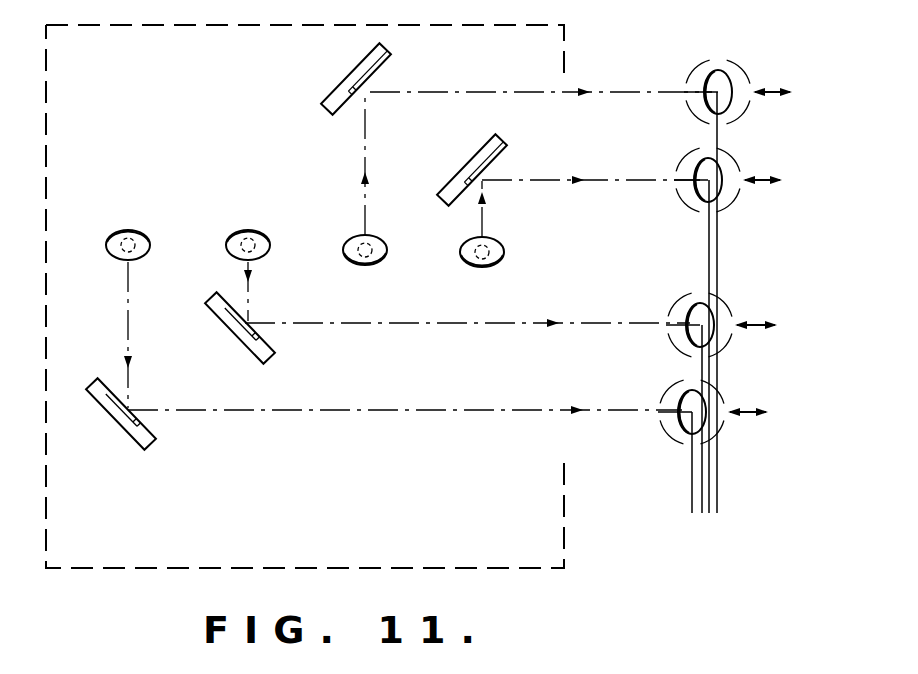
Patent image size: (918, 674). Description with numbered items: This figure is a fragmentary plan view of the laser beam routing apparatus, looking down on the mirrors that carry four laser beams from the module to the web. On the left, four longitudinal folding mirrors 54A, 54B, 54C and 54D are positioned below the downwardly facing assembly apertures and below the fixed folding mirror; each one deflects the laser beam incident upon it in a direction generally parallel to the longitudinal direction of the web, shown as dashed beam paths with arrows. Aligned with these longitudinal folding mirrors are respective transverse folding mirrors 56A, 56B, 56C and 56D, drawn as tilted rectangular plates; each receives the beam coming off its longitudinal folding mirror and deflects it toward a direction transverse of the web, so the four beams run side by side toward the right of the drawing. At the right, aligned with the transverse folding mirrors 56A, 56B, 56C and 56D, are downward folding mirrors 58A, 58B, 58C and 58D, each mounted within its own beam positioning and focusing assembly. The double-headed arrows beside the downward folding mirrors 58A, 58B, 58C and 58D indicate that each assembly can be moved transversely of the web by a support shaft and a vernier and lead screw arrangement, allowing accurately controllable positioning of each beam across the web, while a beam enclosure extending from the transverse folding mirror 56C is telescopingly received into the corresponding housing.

The longitudinal folding mirror 54A is at (470, 272).
The longitudinal folding mirror 54B is at (352, 270).
The longitudinal folding mirror 54C is at (260, 230).
The longitudinal folding mirror 54D is at (140, 230).
The transverse folding mirror 56A is at (497, 165).
The transverse folding mirror 56B is at (380, 76).
The transverse folding mirror 56C is at (263, 332).
The transverse folding mirror 56D is at (140, 417).
The downward folding mirror 58A is at (707, 165).
The downward folding mirror 58B is at (720, 72).
The downward folding mirror 58C is at (693, 305).
The downward folding mirror 58D is at (688, 393).